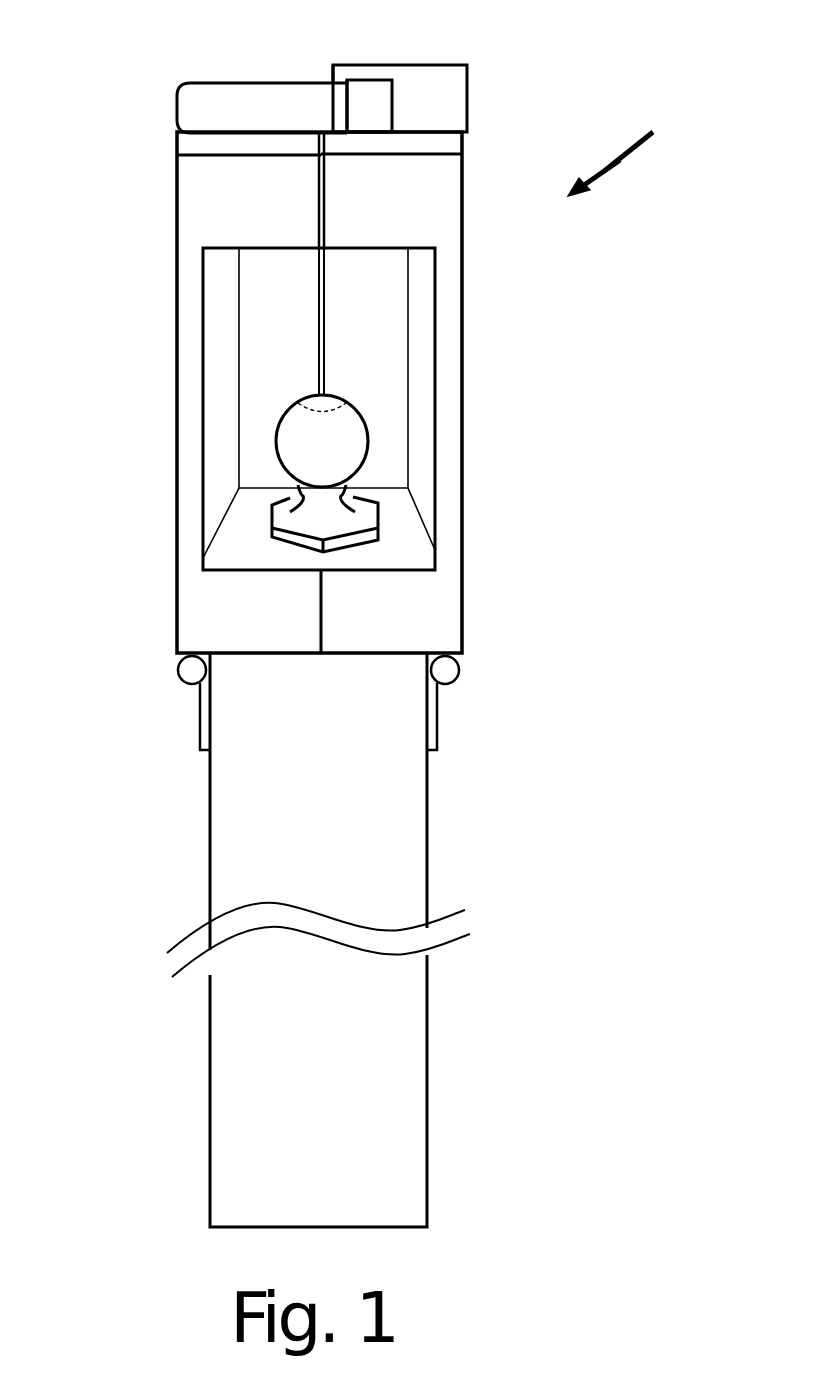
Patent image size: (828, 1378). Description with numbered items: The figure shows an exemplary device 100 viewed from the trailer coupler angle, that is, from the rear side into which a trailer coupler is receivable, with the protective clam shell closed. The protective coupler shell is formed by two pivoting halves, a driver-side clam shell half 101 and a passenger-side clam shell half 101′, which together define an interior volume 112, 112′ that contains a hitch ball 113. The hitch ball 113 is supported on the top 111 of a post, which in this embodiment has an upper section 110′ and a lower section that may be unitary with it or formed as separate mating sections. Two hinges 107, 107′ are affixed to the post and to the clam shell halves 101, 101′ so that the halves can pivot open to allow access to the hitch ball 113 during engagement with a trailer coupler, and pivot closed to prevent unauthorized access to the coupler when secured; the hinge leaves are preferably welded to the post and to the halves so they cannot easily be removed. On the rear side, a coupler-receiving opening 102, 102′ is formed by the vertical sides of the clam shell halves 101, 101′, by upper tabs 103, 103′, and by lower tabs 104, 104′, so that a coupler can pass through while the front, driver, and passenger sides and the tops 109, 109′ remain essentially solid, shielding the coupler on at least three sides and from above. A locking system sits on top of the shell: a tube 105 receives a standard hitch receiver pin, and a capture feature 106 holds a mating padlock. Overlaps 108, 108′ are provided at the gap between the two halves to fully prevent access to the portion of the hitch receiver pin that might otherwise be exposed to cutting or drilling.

The device 100 is at (624, 148).
The clam shell half 101 is at (193, 392).
The clam shell half 101′ is at (451, 392).
The coupler-receiving opening 102 is at (200, 409).
The coupler-receiving opening 102′ is at (438, 409).
The upper tab 103 is at (272, 214).
The upper tab 103′ is at (412, 214).
The lower tab 104 is at (272, 616).
The lower tab 104′ is at (410, 616).
The tube 105 is at (224, 96).
The padlock capture 106 is at (445, 98).
The hinge 107 is at (147, 693).
The hinge 107′ is at (495, 703).
The overlap 108 is at (294, 42).
The overlap 108′ is at (402, 66).
The top 109 is at (209, 132).
The top 109′ is at (440, 160).
The upper section of post 110′ is at (338, 834).
The top of post 111 is at (221, 510).
The interior volume 112 is at (303, 329).
The interior volume 112′ is at (395, 329).
The hitch ball 113 is at (432, 459).